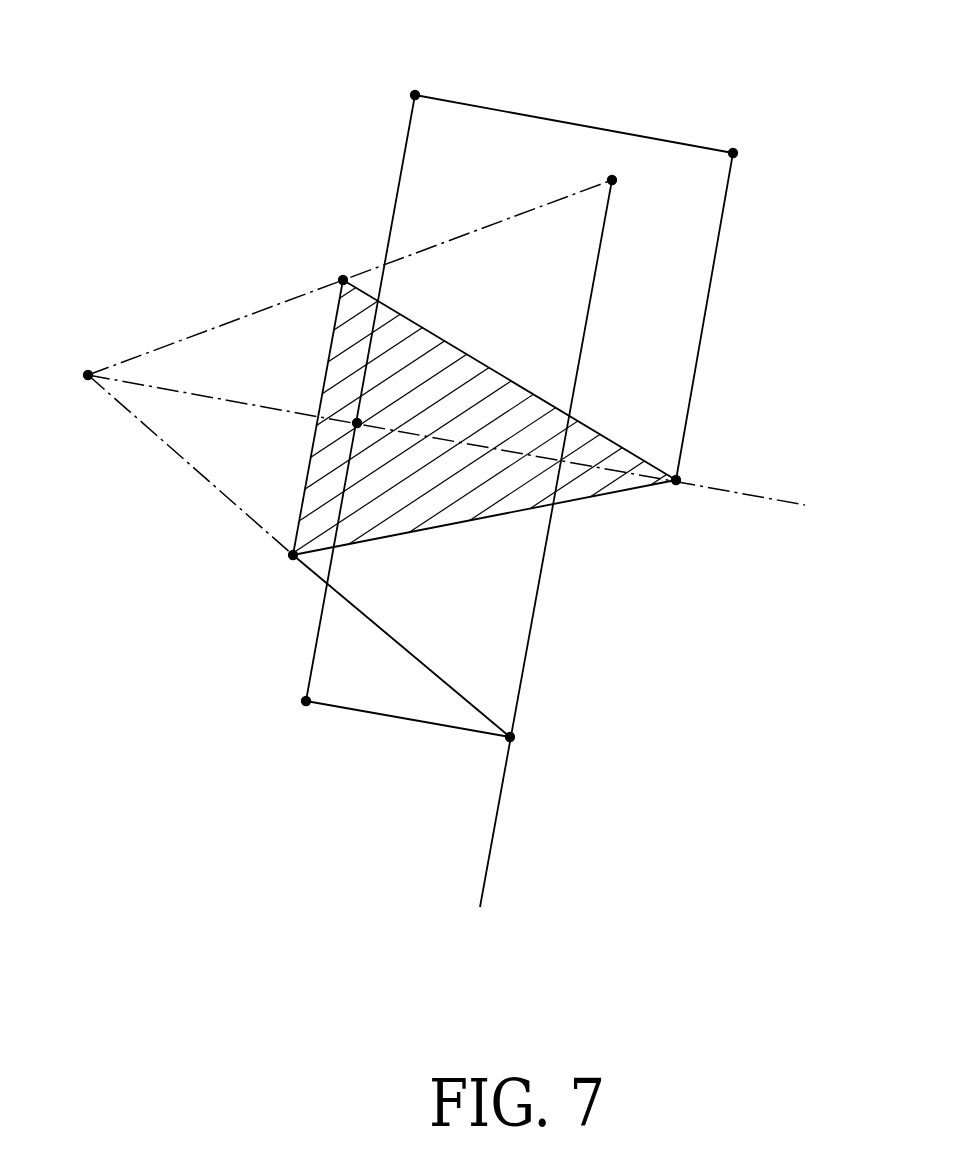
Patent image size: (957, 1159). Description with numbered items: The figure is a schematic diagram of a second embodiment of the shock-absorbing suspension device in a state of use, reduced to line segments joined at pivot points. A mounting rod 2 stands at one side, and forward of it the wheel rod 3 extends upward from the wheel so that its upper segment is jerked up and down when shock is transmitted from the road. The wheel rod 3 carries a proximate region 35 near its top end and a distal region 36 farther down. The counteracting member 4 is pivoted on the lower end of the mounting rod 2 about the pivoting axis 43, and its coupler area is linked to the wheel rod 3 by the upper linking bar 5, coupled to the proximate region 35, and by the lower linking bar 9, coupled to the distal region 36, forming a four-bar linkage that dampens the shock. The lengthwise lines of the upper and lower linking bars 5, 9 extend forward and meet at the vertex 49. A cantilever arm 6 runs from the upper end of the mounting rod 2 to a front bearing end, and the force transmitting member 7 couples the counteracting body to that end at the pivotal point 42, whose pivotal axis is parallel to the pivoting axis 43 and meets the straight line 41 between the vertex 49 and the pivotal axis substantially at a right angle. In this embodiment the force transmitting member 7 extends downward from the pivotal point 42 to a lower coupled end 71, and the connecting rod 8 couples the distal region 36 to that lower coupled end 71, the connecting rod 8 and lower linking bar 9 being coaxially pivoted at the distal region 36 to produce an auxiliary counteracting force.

The mounting rod 2 is at (717, 262).
The wheel rod 3 is at (497, 810).
The counteracting member 4 is at (325, 378).
The upper linking bar 5 is at (533, 207).
The cantilever arm 6 is at (507, 110).
The force transmitting member 7 is at (390, 197).
The connecting rod 8 is at (408, 720).
The lower linking bar 9 is at (400, 648).
The proximate region 35 is at (612, 180).
The distal region 36 is at (510, 737).
The straight line 41 is at (718, 488).
The pivotal point 42 is at (357, 423).
The pivoting axis 43 is at (676, 480).
The vertex 49 is at (88, 375).
The lower coupled end 71 is at (306, 701).